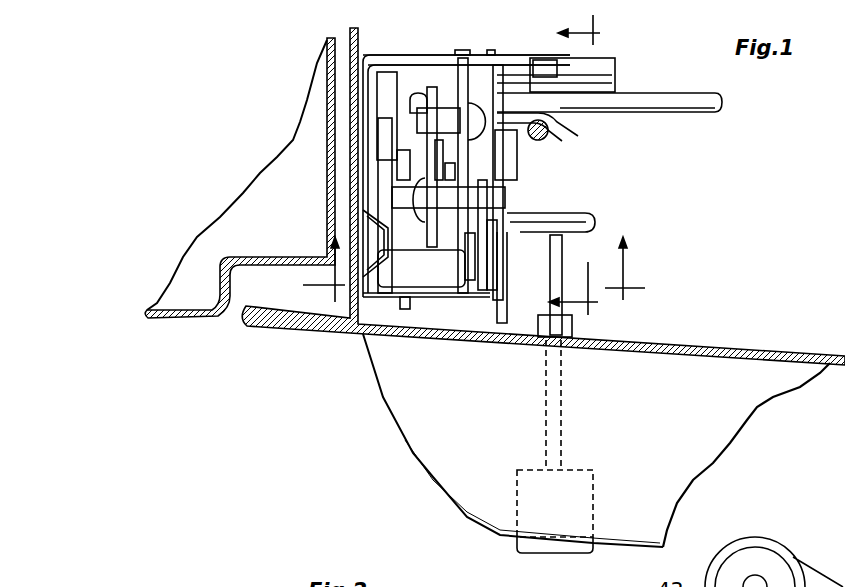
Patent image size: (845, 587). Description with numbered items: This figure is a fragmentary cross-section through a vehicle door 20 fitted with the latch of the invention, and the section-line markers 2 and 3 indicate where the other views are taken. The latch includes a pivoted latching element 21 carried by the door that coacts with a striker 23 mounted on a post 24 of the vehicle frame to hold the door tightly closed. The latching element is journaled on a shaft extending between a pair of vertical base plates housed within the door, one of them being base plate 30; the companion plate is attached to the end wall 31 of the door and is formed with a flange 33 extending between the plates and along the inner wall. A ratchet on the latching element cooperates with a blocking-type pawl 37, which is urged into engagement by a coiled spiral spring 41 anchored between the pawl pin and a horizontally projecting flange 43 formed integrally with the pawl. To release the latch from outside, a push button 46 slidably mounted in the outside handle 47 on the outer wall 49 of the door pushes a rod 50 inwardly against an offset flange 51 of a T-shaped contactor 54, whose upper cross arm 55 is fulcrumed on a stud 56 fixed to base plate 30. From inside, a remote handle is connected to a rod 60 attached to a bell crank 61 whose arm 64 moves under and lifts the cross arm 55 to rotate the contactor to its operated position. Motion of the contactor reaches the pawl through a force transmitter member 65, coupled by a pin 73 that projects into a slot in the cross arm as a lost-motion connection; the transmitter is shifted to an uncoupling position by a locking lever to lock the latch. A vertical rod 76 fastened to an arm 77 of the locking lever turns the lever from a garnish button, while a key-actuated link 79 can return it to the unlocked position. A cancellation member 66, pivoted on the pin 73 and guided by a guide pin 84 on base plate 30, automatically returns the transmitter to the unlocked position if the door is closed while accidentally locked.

The door 20 is at (347, 347).
The latching element 21 is at (367, 185).
The striker 23 is at (335, 167).
The post 24 is at (192, 323).
The base plate 30 is at (466, 297).
The end wall 31 is at (353, 36).
The flange 33 is at (509, 60).
The pawl 37 is at (373, 200).
The coiled spiral spring 41 is at (410, 333).
The flange 43 is at (418, 297).
The push button 46 is at (548, 557).
The outside handle 47 is at (393, 405).
The outer wall 49 is at (763, 360).
The rod 50 is at (553, 283).
The offset flange 51 is at (583, 229).
The contactor 54 is at (524, 165).
The cross arm 55 is at (480, 180).
The stud 56 is at (500, 258).
The rod 60 is at (720, 108).
The bell crank 61 is at (611, 84).
The arm 64 is at (500, 66).
The force transmitter member 65 is at (450, 252).
The cancellation member 66 is at (433, 80).
The pin 73 is at (515, 210).
The vertical rod 76 is at (546, 138).
The arm 77 is at (557, 113).
The link 79 is at (487, 340).
The guide pin 84 is at (430, 103).
The section line 2- 2 is at (468, 271).
The section line 3- 3 is at (586, 171).